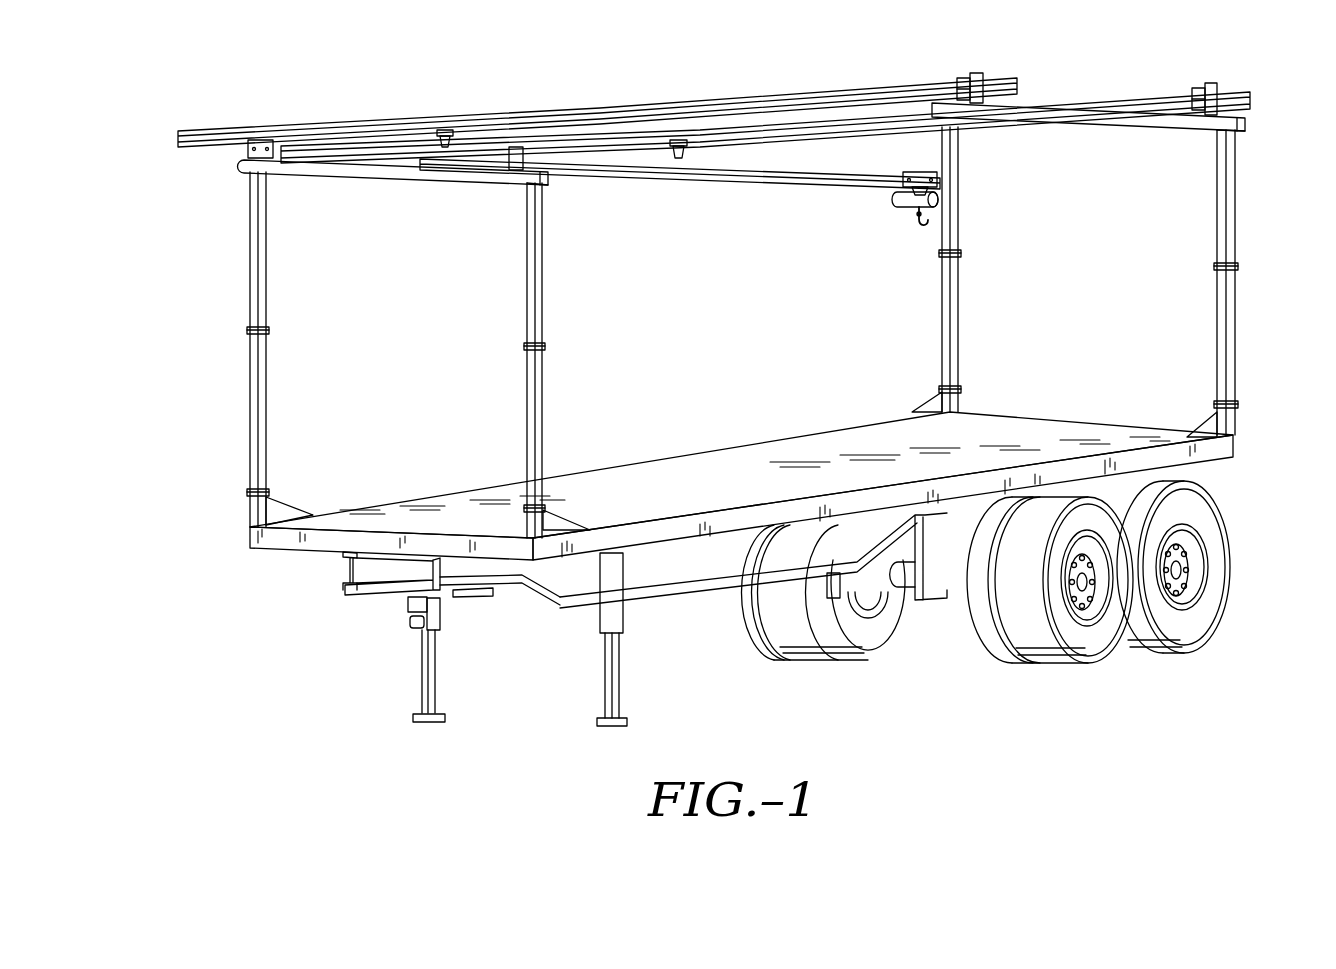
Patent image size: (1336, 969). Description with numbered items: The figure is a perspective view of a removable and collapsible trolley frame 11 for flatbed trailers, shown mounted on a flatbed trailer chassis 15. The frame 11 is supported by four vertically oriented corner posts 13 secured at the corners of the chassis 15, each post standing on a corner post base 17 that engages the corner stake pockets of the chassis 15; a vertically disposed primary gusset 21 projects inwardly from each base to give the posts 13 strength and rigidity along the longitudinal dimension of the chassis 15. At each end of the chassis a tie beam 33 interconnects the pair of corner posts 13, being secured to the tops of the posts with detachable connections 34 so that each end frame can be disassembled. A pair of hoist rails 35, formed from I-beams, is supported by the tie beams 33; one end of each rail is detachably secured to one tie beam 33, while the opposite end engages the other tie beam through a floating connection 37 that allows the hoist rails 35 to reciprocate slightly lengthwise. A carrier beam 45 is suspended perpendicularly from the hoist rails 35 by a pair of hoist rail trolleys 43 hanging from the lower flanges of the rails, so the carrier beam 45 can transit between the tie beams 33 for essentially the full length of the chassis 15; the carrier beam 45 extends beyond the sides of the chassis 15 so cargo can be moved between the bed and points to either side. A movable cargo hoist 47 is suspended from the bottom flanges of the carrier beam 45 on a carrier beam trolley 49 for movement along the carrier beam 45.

The trolley frame 11 is at (636, 69).
The corner post 13 is at (268, 278).
The flatbed trailer chassis 15 is at (1233, 446).
The corner post base 17 is at (248, 512).
The primary gusset 21 is at (295, 507).
The tie beam 33 is at (1017, 104).
The detachable connection 34 is at (523, 187).
The hoist rail 35 is at (870, 88).
The floating connection 37 is at (968, 73).
The hoist rail trolley 43 is at (444, 133).
The carrier beam 45 is at (762, 184).
The cargo hoist 47 is at (890, 210).
The carrier beam trolley 49 is at (908, 173).